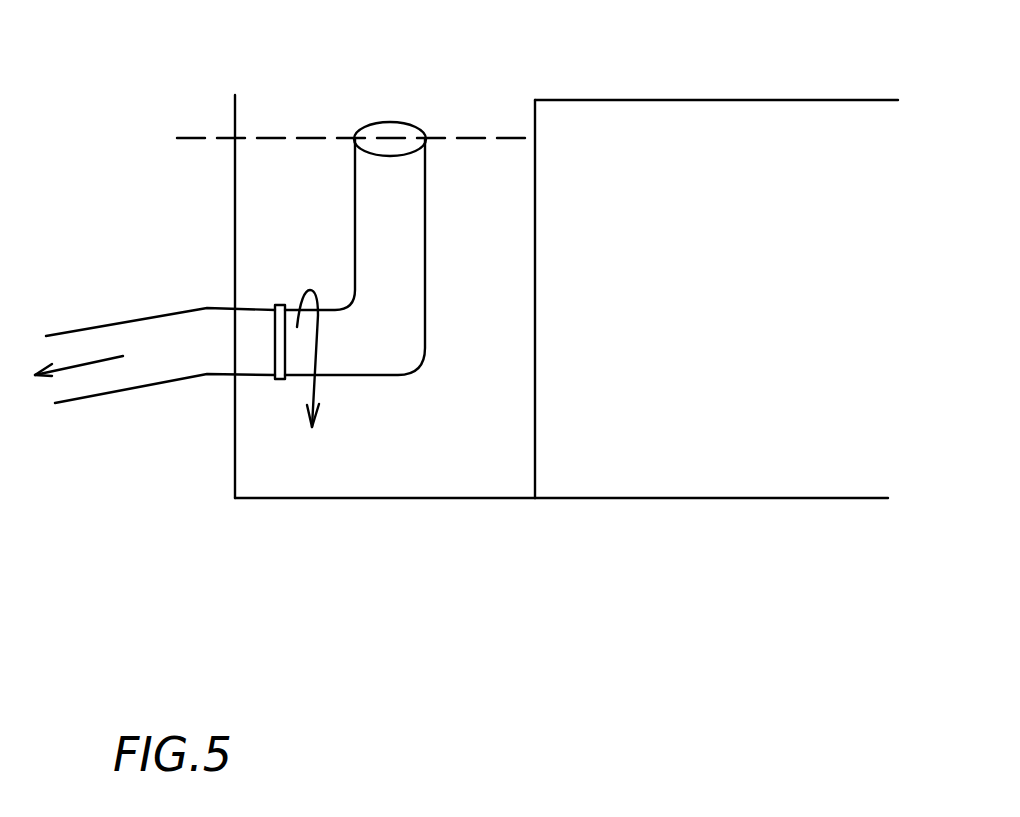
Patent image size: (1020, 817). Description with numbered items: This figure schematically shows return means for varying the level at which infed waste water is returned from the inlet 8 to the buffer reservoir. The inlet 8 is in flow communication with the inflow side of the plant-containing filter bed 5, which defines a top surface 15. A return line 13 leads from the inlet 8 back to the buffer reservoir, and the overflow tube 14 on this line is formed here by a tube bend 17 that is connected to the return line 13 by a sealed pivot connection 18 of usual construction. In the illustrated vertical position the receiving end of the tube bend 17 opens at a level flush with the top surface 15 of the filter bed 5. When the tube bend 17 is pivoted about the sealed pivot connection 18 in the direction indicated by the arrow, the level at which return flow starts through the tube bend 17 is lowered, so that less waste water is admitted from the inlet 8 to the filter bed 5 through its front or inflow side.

The plant-containing filter bed 5 is at (725, 463).
The inlet 8 is at (480, 477).
The return line 13 is at (140, 368).
The overflow tube 14 is at (535, 197).
The top surface 15 is at (690, 98).
The tube bend 17 is at (375, 236).
The sealed pivot connection 18 is at (277, 380).